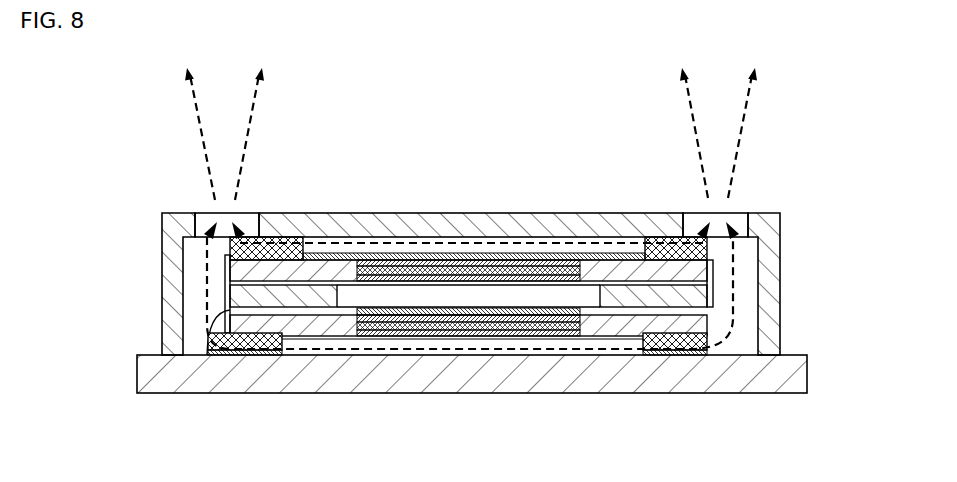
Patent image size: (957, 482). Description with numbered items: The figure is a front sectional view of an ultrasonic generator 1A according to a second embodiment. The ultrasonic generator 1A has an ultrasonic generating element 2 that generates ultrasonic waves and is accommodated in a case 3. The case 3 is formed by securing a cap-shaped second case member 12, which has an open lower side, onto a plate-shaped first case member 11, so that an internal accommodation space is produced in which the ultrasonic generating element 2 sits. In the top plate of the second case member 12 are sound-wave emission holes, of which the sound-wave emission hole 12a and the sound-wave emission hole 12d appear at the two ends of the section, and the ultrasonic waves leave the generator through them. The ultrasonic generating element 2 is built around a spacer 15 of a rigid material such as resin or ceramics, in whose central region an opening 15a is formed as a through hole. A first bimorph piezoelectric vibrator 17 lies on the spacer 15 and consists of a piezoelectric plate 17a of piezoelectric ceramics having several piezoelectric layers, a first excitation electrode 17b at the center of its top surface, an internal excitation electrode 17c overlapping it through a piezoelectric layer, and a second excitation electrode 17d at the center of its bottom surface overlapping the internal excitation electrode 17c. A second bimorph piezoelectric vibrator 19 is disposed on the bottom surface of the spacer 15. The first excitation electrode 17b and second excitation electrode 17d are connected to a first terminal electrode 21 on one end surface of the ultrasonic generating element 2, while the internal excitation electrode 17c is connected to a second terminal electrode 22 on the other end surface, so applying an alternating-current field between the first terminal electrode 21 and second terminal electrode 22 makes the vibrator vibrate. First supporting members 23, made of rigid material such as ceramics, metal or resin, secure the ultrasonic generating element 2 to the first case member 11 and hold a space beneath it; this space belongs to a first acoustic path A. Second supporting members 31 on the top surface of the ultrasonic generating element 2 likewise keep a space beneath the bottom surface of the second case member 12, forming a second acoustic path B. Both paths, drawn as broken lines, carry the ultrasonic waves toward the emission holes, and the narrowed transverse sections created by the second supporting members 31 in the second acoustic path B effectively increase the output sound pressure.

The ultrasonic generator 1A is at (152, 193).
The ultrasonic generating element 2 is at (633, 255).
The case 3 is at (840, 245).
The first case member 11 is at (797, 355).
The second case member 12 is at (780, 258).
The sound-wave emission hole 12a is at (248, 218).
The sound-wave emission hole 12d is at (740, 218).
The spacer 15 is at (602, 315).
The opening 15a is at (410, 297).
The first bimorph piezoelectric vibrator 17 is at (602, 255).
The piezoelectric plate 17a is at (337, 253).
The first excitation electrode 17b is at (455, 258).
The internal excitation electrode 17c is at (487, 260).
The second excitation electrode 17d is at (532, 262).
The second bimorph piezoelectric vibrator 19 is at (470, 343).
The first terminal electrode 21 is at (228, 274).
The second terminal electrode 22 is at (713, 298).
The first supporting member 23 is at (287, 347).
The second supporting member 31 is at (305, 245).
The first acoustic path A is at (350, 350).
The second acoustic path B is at (387, 241).